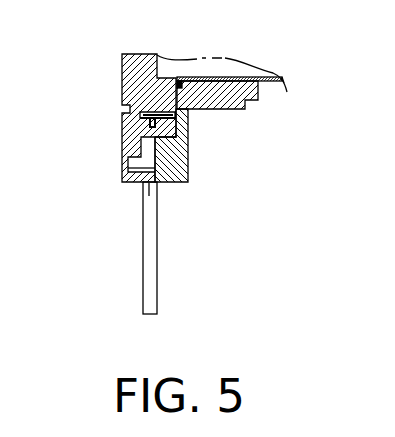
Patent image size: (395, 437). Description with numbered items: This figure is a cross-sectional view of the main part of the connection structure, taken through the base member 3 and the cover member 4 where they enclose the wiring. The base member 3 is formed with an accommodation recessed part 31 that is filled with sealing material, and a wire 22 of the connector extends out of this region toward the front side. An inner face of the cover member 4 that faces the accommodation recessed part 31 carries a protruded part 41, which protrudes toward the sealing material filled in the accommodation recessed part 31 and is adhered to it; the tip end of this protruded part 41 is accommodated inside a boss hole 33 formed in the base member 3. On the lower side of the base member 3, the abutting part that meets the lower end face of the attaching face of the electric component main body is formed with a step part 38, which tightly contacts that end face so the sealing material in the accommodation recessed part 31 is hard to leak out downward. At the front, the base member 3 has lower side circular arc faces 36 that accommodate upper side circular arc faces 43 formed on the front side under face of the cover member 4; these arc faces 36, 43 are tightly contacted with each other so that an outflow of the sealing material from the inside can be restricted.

The accommodation recessed part 31 is at (122, 137).
The base member 3 is at (188, 155).
The boss hole 33 is at (188, 116).
The step part 38 is at (175, 112).
The protruded part 41 is at (188, 140).
The cover member 4 is at (122, 168).
The lower side circular arc faces 36 is at (149, 183).
The upper side circular arc faces 43 is at (156, 183).
The wires 22 is at (157, 277).